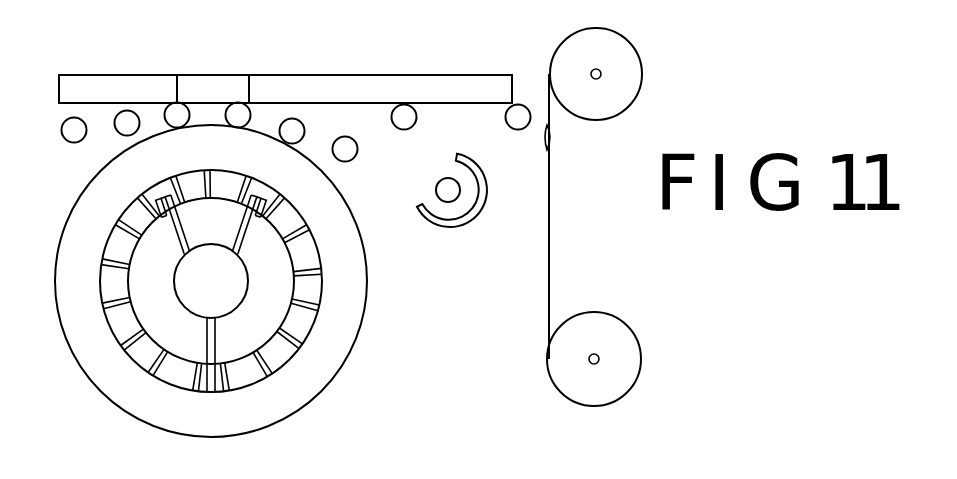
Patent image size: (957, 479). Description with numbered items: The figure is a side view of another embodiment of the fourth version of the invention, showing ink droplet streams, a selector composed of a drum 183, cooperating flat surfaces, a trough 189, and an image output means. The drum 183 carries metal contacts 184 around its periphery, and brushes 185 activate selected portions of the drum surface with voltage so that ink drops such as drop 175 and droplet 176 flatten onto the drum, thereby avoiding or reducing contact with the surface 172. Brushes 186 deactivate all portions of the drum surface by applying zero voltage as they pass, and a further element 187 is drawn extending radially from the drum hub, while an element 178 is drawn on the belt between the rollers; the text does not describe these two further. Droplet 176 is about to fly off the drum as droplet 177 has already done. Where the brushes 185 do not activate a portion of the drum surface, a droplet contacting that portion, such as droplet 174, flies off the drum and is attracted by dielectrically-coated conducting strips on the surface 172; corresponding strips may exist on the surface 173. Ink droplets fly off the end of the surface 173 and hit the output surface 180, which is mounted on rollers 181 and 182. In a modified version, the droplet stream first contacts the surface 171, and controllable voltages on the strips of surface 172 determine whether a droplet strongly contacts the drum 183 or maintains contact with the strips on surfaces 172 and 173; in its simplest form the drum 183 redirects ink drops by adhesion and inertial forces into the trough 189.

The surface 171 is at (118, 89).
The surface 172 is at (213, 89).
The surface 173 is at (380, 89).
The droplet 174 is at (177, 118).
The ink drop 175 is at (236, 118).
The droplet 176 is at (294, 128).
The droplet 177 is at (446, 190).
The belt guide 178 is at (542, 138).
The output surface 180 is at (548, 252).
The roller 181 is at (565, 59).
The roller 182 is at (565, 360).
The drum 183 is at (97, 168).
The metal contacts 184 is at (245, 378).
The brushes 185 is at (168, 226).
The brushes 186 is at (254, 226).
The radial bar 187 is at (212, 340).
The trough 189 is at (435, 226).